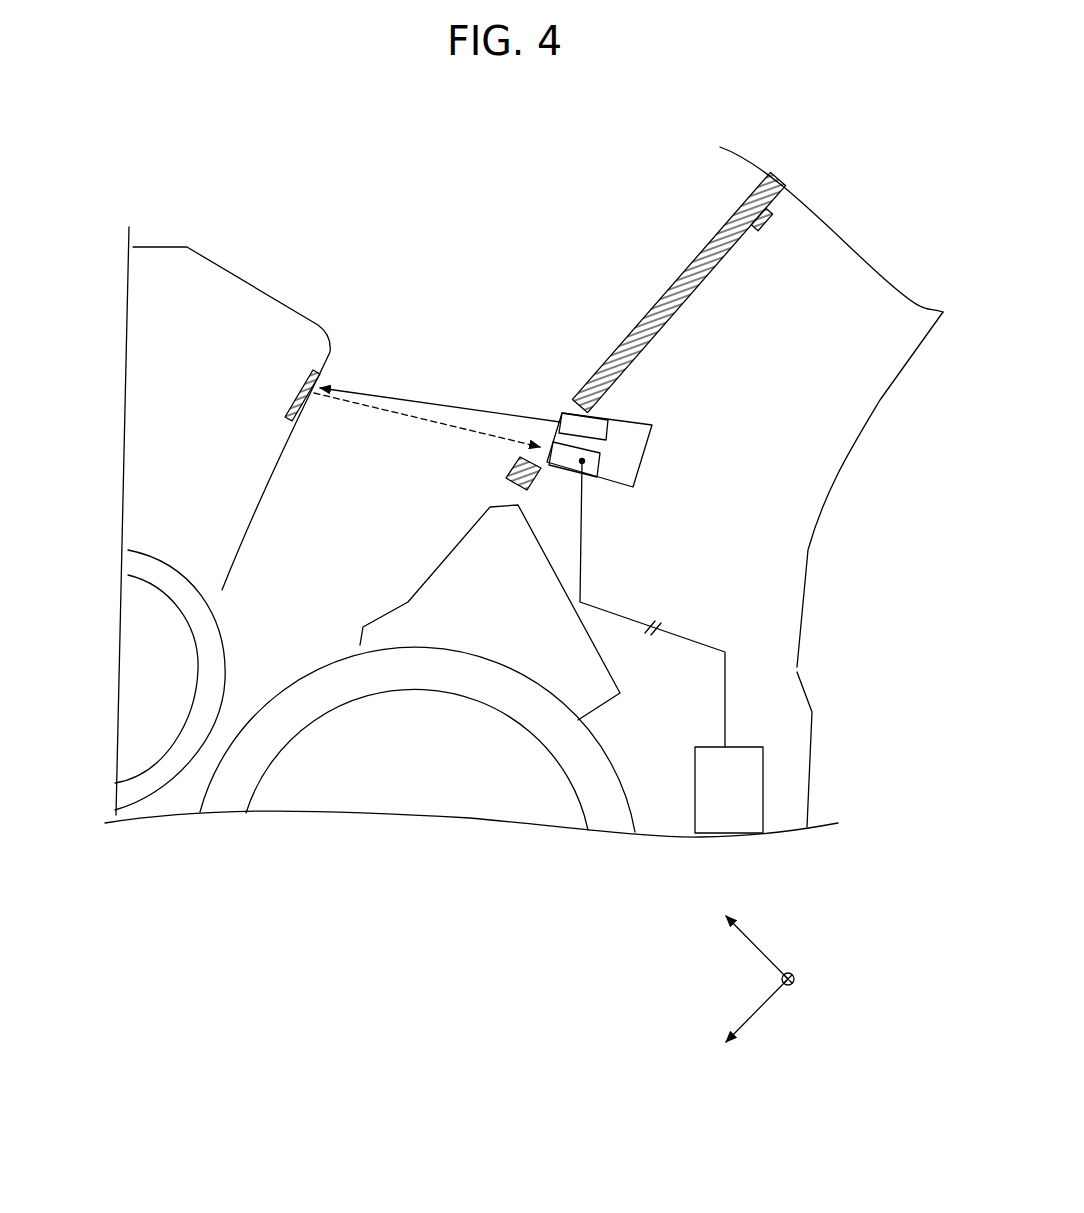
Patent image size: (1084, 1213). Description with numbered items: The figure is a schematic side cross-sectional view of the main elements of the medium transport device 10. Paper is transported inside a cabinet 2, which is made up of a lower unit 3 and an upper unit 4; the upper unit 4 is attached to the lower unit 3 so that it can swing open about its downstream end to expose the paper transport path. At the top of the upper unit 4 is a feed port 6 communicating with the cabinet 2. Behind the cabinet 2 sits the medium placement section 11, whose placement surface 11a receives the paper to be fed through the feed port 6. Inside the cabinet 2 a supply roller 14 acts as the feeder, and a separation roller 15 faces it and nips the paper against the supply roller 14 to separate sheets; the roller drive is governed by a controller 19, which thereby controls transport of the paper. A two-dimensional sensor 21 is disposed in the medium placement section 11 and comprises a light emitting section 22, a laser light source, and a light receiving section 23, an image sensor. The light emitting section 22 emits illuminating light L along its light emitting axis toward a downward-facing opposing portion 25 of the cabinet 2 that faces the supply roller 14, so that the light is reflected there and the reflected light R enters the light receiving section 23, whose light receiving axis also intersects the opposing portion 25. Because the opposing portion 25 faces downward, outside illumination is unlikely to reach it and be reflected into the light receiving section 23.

The cabinet 2 is at (476, 552).
The lower unit 3 is at (812, 737).
The upper unit 4 is at (197, 250).
The feed port 6 is at (362, 334).
The medium transport device 10 is at (846, 607).
The medium placement section 11 is at (830, 483).
The placement surface 11a is at (657, 292).
The supply roller 14 is at (370, 767).
The separation roller 15 is at (123, 702).
The controller 19 is at (763, 780).
The two-dimensional sensor 21 is at (700, 505).
The light emitting section 22 is at (610, 427).
The light receiving section 23 is at (600, 465).
The opposing portion 25 is at (305, 407).
The illuminating light L is at (543, 418).
The reflected light R is at (497, 437).